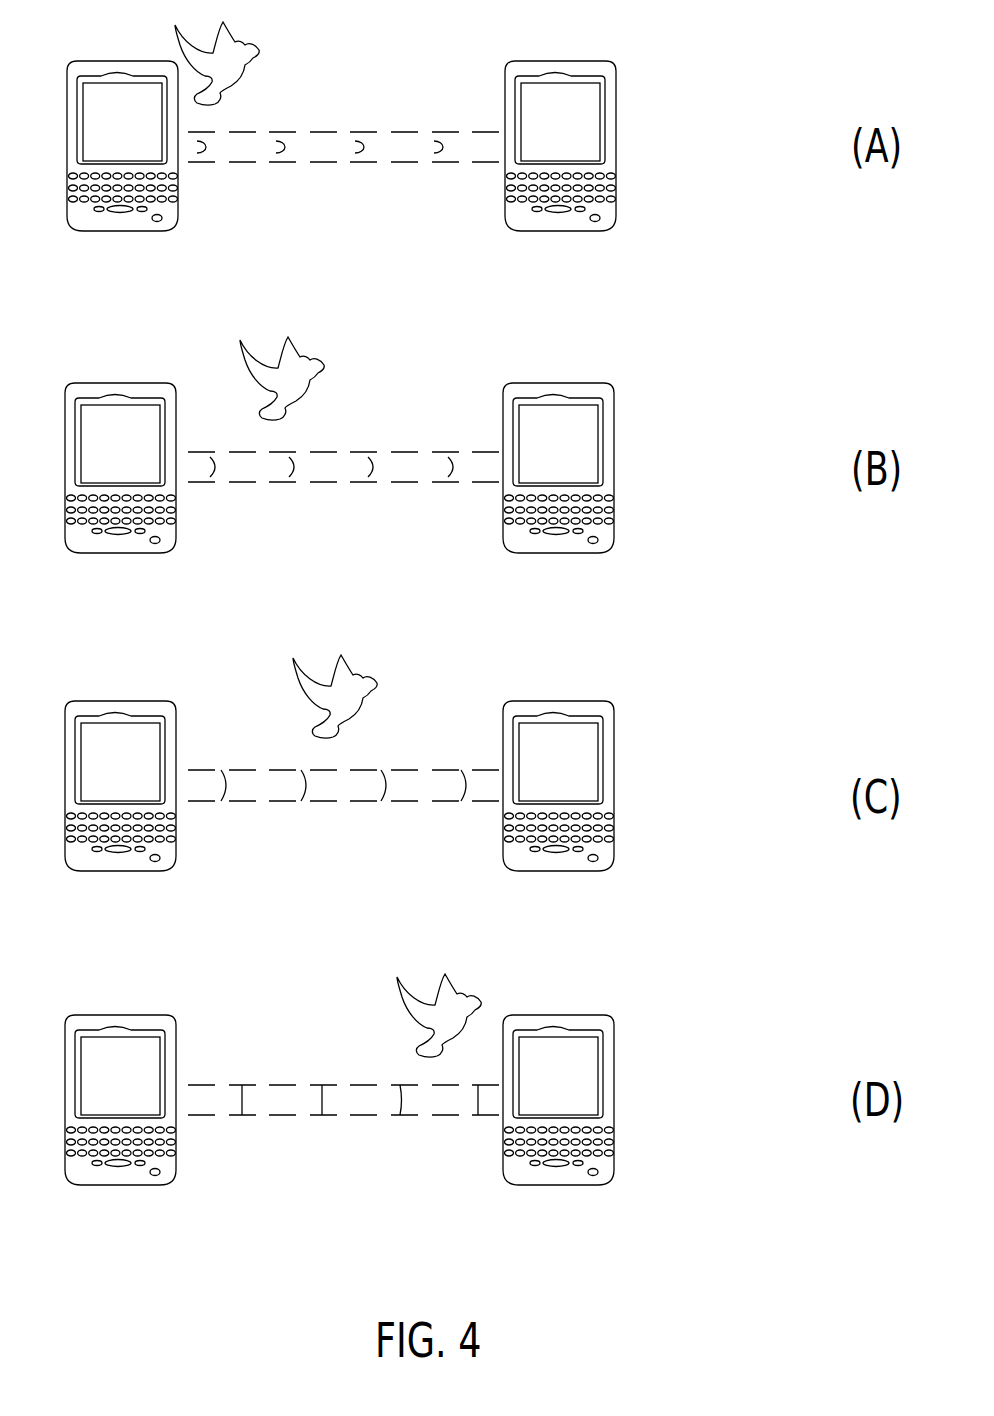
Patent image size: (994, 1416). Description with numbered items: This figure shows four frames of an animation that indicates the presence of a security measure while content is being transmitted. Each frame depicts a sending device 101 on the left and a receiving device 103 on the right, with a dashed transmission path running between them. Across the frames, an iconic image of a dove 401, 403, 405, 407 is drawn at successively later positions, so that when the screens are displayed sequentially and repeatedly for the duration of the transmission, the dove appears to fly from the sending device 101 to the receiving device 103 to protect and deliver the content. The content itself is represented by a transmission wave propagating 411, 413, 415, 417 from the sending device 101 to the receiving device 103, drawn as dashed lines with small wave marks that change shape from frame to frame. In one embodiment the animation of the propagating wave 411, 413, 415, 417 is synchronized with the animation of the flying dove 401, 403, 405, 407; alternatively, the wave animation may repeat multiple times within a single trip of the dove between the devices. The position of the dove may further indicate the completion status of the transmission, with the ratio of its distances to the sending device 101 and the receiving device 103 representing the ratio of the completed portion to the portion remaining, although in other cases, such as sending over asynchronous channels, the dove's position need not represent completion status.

The sending device 101 is at (135, 231).
The receiving device 103 is at (577, 231).
The iconic image of dove 401 is at (255, 62).
The iconic image of dove 403 is at (320, 377).
The iconic image of dove 405 is at (373, 695).
The iconic image of dove 407 is at (400, 1003).
The transmission wave propagating 411 is at (361, 150).
The transmission wave propagating 413 is at (371, 470).
The transmission wave propagating 415 is at (387, 790).
The transmission wave propagating 417 is at (402, 1105).